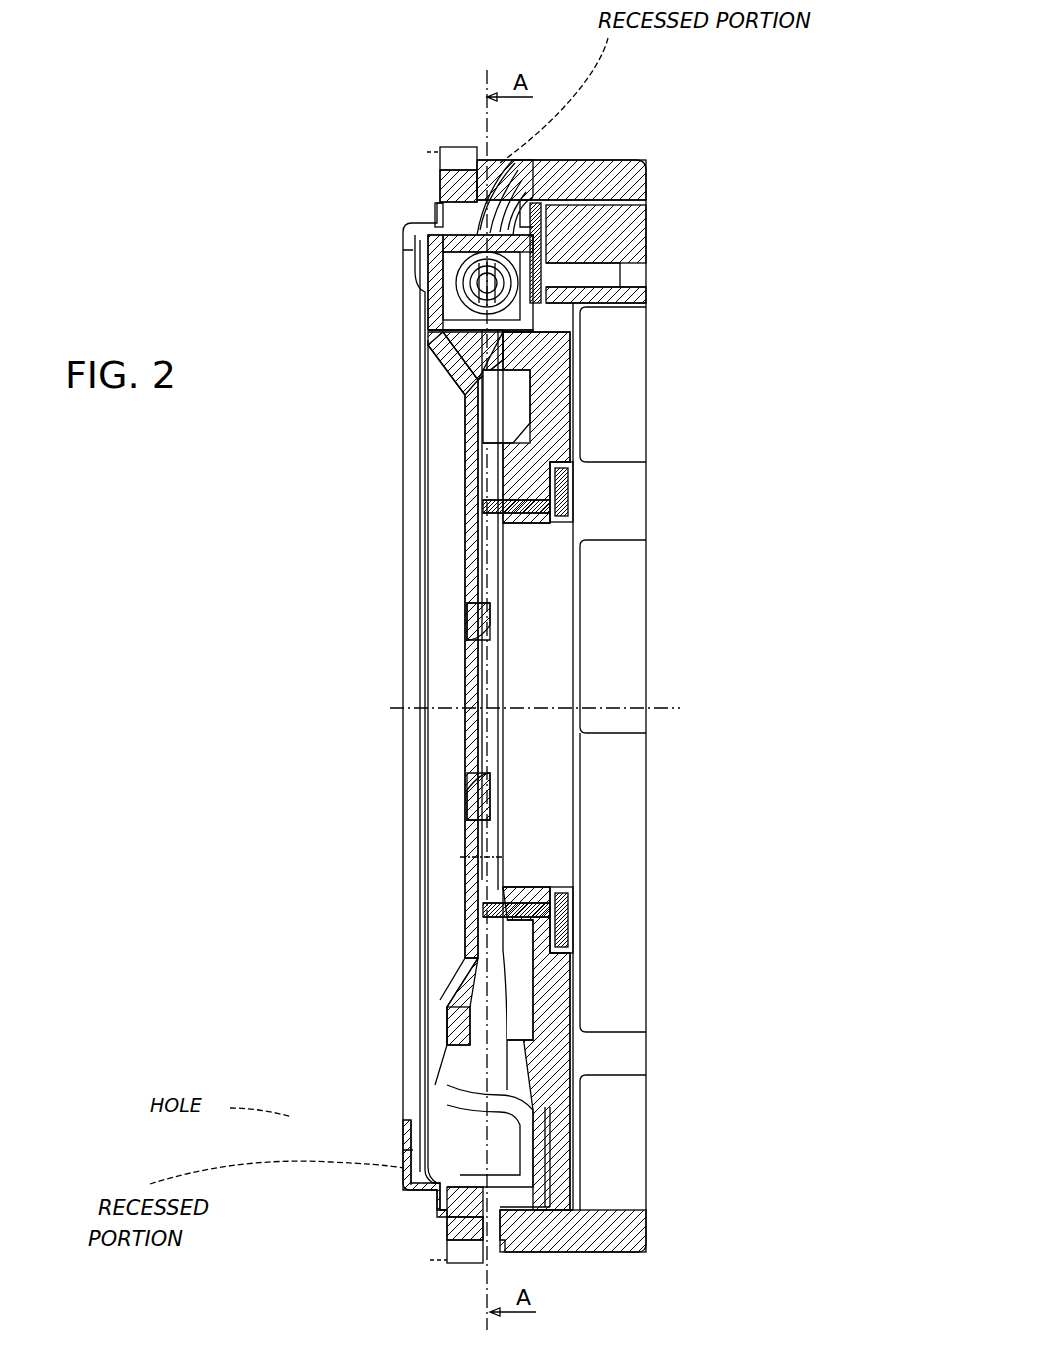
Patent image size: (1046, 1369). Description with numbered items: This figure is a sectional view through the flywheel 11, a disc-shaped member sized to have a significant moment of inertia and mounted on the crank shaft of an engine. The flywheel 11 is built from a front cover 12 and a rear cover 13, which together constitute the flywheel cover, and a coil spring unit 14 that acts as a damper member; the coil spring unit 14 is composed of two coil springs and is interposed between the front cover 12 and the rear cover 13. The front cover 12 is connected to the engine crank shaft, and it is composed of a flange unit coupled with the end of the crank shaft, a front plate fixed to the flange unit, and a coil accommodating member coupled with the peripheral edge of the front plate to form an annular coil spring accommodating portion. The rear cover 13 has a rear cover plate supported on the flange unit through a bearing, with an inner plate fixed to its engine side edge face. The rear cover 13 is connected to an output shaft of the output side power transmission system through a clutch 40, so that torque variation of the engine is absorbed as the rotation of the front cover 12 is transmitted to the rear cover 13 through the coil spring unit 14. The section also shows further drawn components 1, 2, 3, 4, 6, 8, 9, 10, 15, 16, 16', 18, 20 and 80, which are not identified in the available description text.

The diaphragm plate 1 is at (427, 343).
The flange 2 is at (440, 185).
The housing 3 is at (644, 180).
The ring member 4 is at (560, 250).
The curved neck portion 6 is at (533, 187).
The seal 8 is at (575, 492).
The hub body 9 is at (500, 542).
The snap ring 10 is at (460, 857).
The flywheel 11 is at (530, 1035).
The front cover 12 is at (490, 573).
The rear cover 13 is at (480, 700).
The coil spring unit 14 is at (428, 295).
The hub 15 is at (447, 1240).
The cover 16 is at (419, 710).
The hole 16' is at (355, 675).
The retaining plate 18 is at (434, 226).
The spacer 20 is at (446, 1222).
The clutch 40 is at (566, 177).
The seal 80 is at (575, 990).